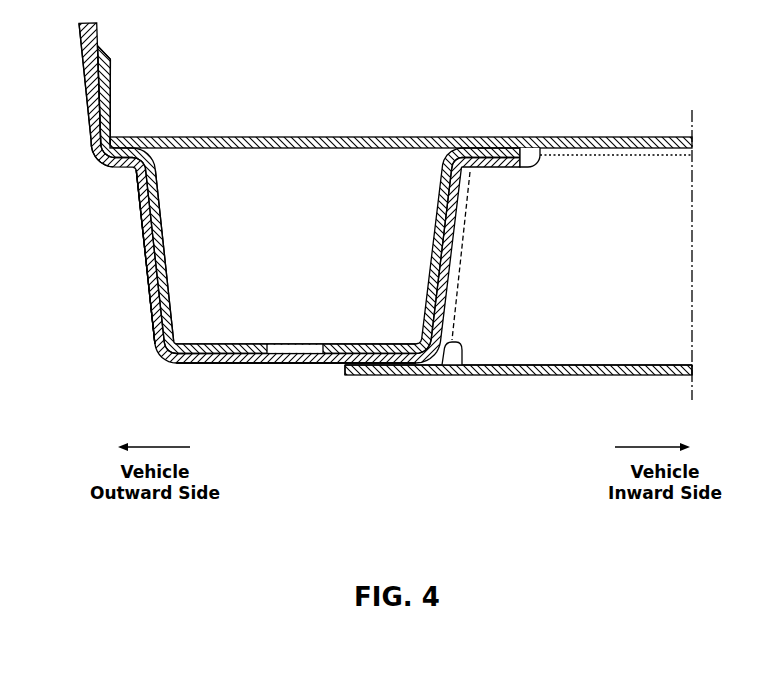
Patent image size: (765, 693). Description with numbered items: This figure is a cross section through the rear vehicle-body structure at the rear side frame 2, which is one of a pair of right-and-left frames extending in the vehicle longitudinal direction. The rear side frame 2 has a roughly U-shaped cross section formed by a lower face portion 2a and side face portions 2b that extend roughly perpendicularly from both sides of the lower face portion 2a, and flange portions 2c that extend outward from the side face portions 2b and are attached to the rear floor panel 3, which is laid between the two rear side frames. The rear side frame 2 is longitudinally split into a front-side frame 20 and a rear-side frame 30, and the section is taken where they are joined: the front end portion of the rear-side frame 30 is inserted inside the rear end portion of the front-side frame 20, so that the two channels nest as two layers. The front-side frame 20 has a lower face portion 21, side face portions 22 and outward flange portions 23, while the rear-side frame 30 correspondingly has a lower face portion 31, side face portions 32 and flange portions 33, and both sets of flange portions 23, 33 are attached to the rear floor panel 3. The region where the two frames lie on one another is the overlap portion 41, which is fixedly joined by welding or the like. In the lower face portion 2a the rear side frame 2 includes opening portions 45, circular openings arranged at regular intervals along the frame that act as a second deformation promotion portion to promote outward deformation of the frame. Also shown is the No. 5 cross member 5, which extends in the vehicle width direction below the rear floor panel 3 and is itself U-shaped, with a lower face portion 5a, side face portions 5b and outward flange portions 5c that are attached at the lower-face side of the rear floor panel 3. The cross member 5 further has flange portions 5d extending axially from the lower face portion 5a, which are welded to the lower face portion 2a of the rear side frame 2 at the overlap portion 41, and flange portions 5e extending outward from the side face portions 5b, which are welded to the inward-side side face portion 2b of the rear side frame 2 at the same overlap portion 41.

The rear side frame 2 is at (166, 371).
The lower face portion 2a is at (253, 364).
The side face portion 2b is at (136, 267).
The flange portion 2c is at (88, 156).
The rear floor panel 3 is at (322, 136).
The No. 5 cross member 5 is at (607, 376).
The lower face portion 5a is at (542, 376).
The side face portion 5b is at (677, 341).
The flange portion 5c is at (604, 147).
The flange portion 5d is at (388, 377).
The flange portion 5e is at (460, 285).
The front-side frame 20 is at (141, 300).
The lower face portion 21 is at (216, 364).
The side face portion 22 is at (143, 237).
The flange portion 23 is at (90, 130).
The rear-side frame 30 is at (218, 342).
The lower face portion 31 is at (257, 344).
The side face portion 32 is at (165, 258).
The flange portion 33 is at (127, 137).
The overlap portion 41 is at (147, 333).
The opening portion 45 is at (319, 342).